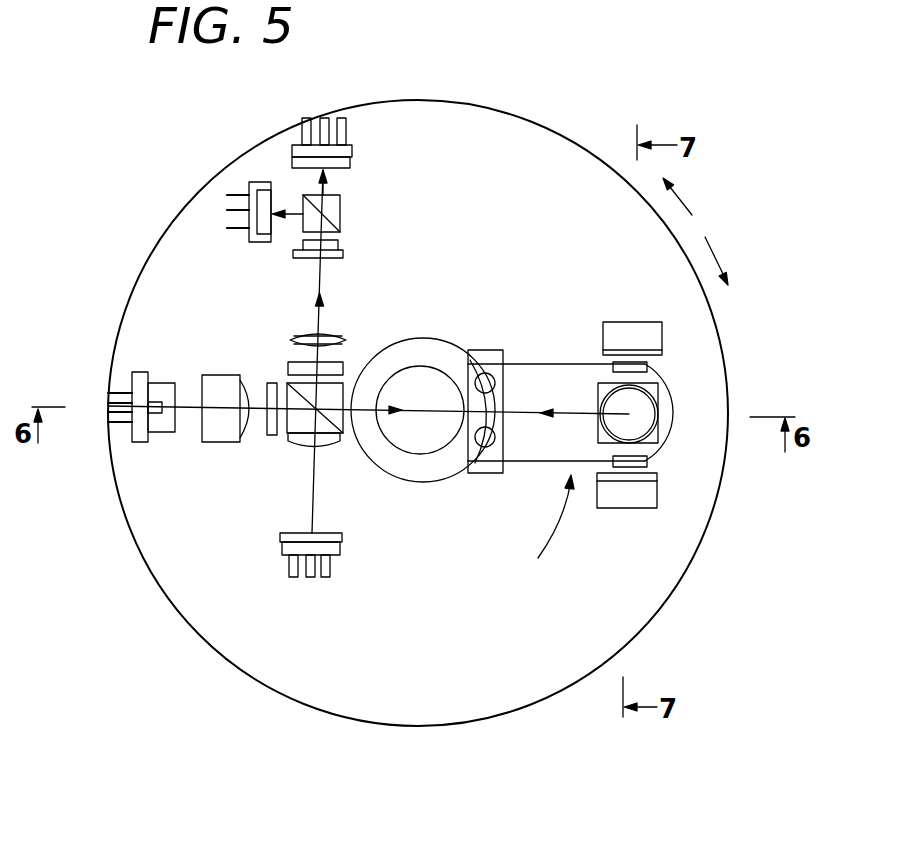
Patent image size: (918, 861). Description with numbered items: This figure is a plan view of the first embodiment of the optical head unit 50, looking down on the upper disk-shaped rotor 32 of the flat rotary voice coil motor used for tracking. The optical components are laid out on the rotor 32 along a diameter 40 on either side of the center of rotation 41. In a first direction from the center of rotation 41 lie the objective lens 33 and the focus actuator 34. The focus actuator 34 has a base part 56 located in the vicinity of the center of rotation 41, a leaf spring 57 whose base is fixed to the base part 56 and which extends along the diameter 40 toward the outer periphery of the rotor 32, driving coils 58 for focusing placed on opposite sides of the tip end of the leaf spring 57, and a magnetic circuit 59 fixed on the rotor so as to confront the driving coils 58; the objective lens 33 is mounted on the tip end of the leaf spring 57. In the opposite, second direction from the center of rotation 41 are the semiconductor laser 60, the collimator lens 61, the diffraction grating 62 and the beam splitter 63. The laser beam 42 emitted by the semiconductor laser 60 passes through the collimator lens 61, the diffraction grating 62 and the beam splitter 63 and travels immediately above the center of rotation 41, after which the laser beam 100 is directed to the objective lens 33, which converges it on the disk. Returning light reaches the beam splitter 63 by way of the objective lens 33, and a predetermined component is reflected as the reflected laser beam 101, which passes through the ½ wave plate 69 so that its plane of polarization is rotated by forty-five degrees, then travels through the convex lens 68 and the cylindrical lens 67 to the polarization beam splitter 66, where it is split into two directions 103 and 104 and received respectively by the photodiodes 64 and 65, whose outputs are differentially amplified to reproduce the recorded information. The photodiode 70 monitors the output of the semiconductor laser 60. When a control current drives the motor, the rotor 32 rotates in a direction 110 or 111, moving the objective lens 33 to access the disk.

The rotor 32 is at (653, 592).
The objective lens 33 is at (650, 413).
The focus actuator 34 is at (545, 535).
The diameter 40 is at (533, 415).
The center of rotation 41 is at (418, 413).
The laser beam 42 is at (400, 418).
The optical head unit 50 is at (577, 85).
The base part 56 is at (485, 350).
The leaf spring 57 is at (560, 364).
The driving coils for focusing 58 is at (647, 367).
The magnetic circuit 59 is at (662, 342).
The semiconductor laser 60 is at (163, 442).
The collimator lens 61 is at (215, 442).
The diffraction grating 62 is at (268, 435).
The beam splitter 63 is at (345, 435).
The photodiode 64 is at (257, 183).
The photodiode 65 is at (352, 150).
The polarization beam splitter 66 is at (340, 208).
The cylindrical lens 67 is at (343, 252).
The convex lens 68 is at (335, 334).
The ½ wave plate 69 is at (345, 366).
The photodiode 70 is at (342, 538).
The laser beam 100 is at (570, 418).
The reflected laser beam 101 is at (318, 318).
The direction 103 is at (290, 216).
The direction 104 is at (330, 187).
The direction 110 is at (715, 252).
The direction 111 is at (690, 205).